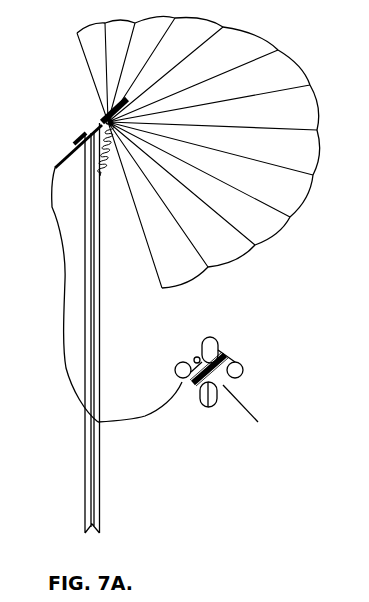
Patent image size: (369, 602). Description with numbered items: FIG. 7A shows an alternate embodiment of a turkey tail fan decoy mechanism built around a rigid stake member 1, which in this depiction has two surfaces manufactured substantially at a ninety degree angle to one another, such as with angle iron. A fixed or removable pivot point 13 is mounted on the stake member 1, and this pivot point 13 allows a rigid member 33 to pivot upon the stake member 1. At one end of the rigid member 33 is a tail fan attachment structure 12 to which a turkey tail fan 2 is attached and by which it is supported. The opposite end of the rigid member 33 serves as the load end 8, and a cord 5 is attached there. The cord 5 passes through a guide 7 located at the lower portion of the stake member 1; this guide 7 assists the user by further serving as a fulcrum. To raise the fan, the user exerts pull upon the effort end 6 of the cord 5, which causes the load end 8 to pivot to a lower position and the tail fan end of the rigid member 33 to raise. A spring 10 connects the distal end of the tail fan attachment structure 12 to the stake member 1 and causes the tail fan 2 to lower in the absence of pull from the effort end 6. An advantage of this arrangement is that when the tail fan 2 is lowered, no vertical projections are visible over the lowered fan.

The stake member 1 is at (102, 328).
The turkey tail fan 2 is at (302, 62).
The cord 5 is at (142, 420).
The effort end 6 is at (220, 342).
The guide 7 is at (95, 421).
The load end 8 is at (55, 168).
The spring 10 is at (101, 175).
The tail fan attachment structure 12 is at (110, 100).
The pivot point 13 is at (92, 120).
The rigid member 33 is at (78, 140).